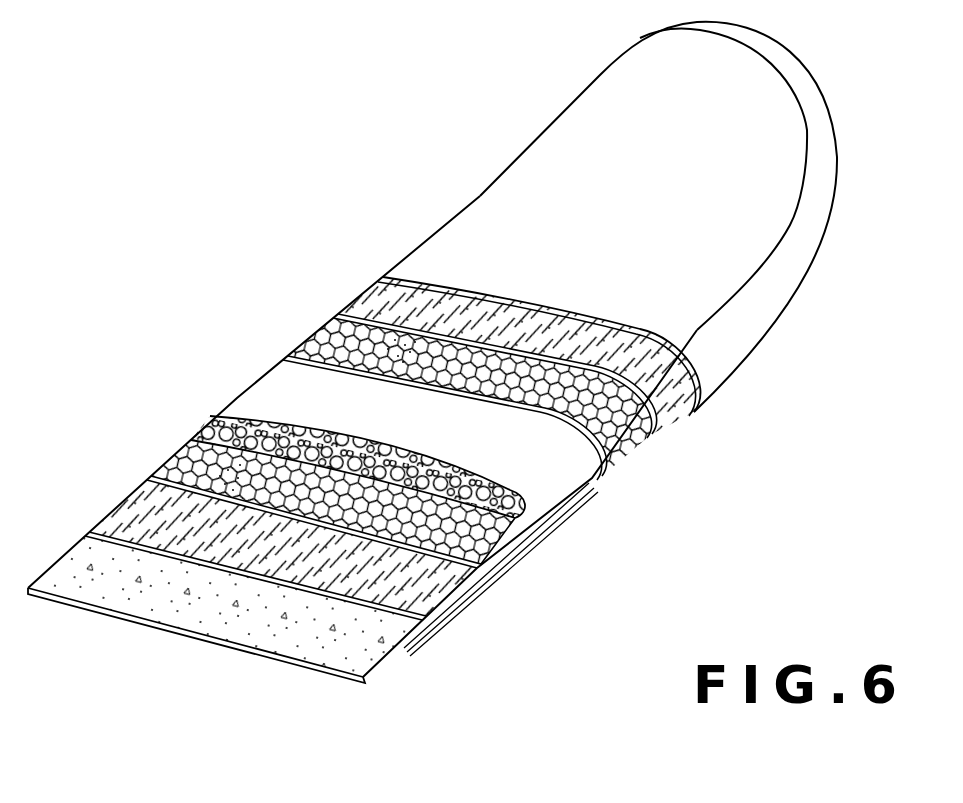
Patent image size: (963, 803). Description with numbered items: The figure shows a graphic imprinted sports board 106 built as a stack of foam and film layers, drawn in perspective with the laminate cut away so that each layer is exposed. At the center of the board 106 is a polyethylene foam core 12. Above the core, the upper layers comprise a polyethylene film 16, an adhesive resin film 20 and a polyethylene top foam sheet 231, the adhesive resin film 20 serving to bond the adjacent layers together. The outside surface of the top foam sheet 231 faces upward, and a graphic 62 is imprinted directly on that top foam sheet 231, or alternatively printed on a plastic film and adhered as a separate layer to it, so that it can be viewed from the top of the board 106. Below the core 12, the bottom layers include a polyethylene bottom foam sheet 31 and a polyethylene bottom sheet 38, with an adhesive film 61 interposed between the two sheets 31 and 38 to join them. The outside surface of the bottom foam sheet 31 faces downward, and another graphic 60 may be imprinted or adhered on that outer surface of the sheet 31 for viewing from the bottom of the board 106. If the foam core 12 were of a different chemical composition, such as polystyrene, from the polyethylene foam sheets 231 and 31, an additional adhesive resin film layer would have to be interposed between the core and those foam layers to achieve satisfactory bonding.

The graphic imprinted sports board 106 is at (306, 228).
The polyethylene film 16 is at (712, 362).
The adhesive resin film 20 is at (668, 397).
The top foam sheet 231 is at (617, 433).
The graphic 62 is at (400, 350).
The polyethylene foam core 12 is at (548, 468).
The bottom foam sheet 31 is at (508, 547).
The graphic 60 is at (232, 477).
The adhesive film 61 is at (430, 592).
The polyethylene bottom sheet 38 is at (382, 645).